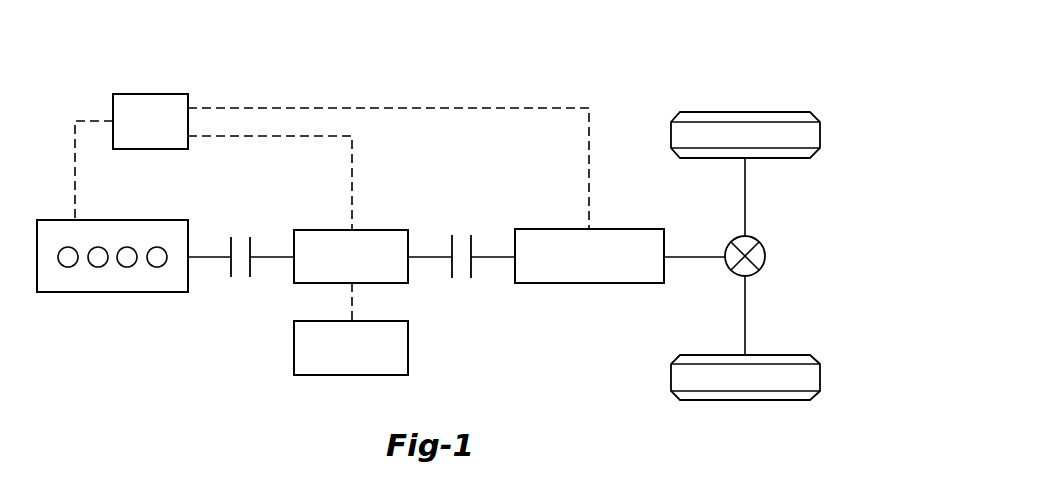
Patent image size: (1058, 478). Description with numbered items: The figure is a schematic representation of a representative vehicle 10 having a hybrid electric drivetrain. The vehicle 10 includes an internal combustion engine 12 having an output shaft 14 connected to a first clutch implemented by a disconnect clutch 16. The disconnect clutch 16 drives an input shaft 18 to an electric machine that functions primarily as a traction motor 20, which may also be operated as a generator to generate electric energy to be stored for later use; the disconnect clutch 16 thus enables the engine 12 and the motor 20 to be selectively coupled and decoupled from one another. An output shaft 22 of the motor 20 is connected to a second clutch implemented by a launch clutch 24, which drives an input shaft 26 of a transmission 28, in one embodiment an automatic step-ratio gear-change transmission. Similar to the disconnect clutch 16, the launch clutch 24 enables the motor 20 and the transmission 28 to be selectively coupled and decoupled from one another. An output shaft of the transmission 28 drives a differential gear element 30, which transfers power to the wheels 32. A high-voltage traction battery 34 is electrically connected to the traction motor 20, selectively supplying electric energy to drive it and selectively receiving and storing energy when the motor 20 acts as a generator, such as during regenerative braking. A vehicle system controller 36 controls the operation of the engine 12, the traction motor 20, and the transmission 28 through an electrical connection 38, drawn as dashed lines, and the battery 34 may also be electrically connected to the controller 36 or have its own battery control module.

The vehicle 10 is at (719, 55).
The internal combustion engine 12 is at (112, 220).
The output shaft 14 is at (209, 257).
The disconnect clutch 16 is at (231, 277).
The input shaft 18 is at (271, 257).
The traction motor 20 is at (320, 230).
The output shaft 22 is at (430, 257).
The launch clutch 24 is at (452, 278).
The input shaft 26 is at (492, 257).
The transmission 28 is at (590, 283).
The differential gear element 30 is at (765, 257).
The wheels 32 is at (747, 112).
The traction battery 34 is at (352, 375).
The vehicle system controller 36 is at (150, 94).
The electrical connection 38 is at (286, 108).